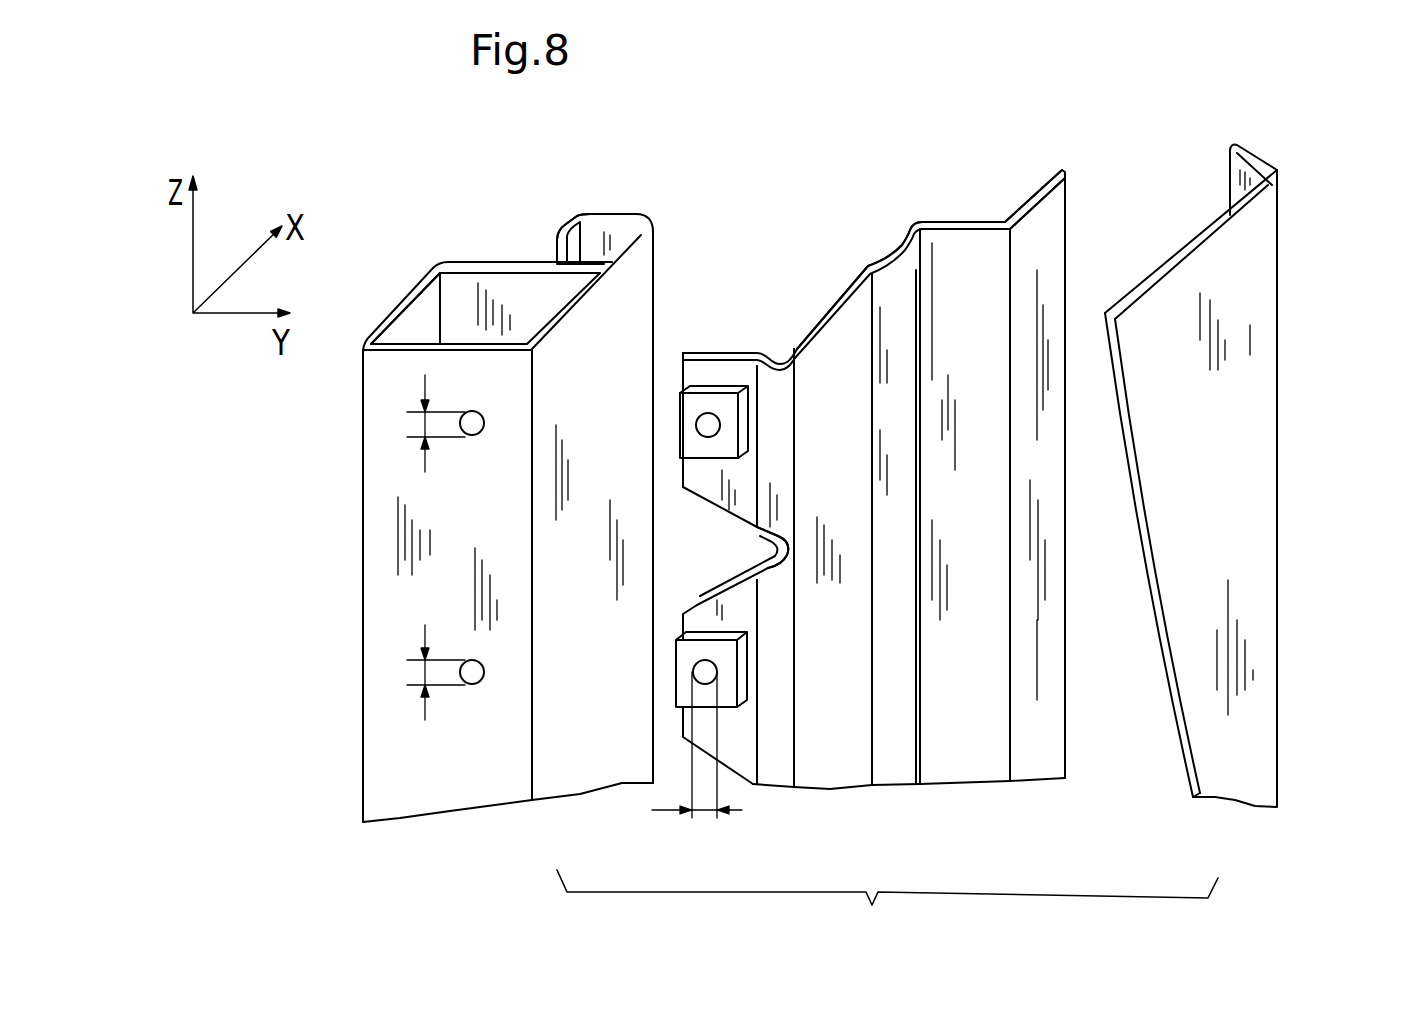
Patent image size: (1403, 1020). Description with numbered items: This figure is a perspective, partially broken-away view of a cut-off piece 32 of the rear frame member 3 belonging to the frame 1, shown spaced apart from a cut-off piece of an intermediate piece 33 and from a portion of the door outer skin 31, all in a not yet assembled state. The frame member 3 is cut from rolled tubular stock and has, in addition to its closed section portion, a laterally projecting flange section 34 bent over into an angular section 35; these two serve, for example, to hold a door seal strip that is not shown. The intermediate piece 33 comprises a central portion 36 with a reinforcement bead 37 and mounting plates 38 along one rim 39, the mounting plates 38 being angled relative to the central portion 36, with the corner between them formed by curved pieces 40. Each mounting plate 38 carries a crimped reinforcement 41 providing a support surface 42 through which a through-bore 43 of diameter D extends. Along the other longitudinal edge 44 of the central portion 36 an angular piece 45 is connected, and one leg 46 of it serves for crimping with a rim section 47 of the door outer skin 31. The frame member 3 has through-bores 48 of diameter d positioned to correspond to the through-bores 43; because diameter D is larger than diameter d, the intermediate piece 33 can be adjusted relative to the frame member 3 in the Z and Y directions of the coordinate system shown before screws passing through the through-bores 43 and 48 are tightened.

The frame 1 is at (308, 698).
The frame member 3 is at (358, 630).
The door outer skin 31 is at (1280, 340).
The cut-off piece 32 is at (375, 552).
The intermediate piece 33 is at (1068, 205).
The flange section 34 is at (655, 232).
The angular section 35 is at (587, 217).
The central portion 36 is at (843, 320).
The reinforcement bead 37 is at (897, 257).
The mounting plates 38 is at (723, 375).
The rim 39 is at (783, 545).
The curved pieces 40 is at (770, 442).
The crimped reinforcements 41 is at (743, 410).
The support surface 42 is at (723, 442).
The through-bore 43 is at (698, 415).
The longitudinal edge 44 is at (920, 220).
The angular piece 45 is at (983, 218).
The leg 46 is at (1045, 253).
The rim section 47 is at (1253, 160).
The through-bores 48 is at (477, 434).